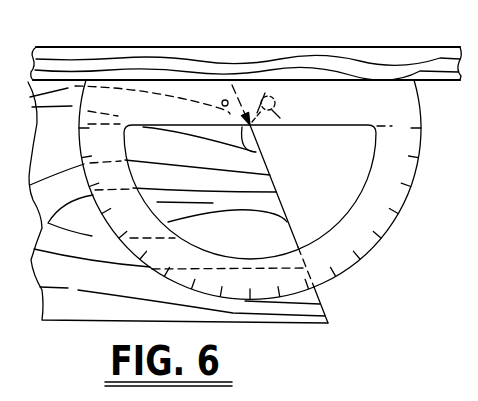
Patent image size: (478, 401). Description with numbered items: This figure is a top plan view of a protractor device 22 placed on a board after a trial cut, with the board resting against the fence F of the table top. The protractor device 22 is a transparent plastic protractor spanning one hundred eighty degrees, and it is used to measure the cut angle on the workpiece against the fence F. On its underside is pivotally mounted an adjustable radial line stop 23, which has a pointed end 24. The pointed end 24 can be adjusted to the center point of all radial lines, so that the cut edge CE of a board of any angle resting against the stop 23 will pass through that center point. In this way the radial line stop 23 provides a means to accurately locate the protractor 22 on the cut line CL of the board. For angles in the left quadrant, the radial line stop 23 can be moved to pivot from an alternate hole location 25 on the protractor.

The fence F is at (110, 55).
The protractor device 22 is at (341, 100).
The radial line stop 23 is at (283, 122).
The pointed end 24 is at (257, 152).
The alternate hole location 25 is at (222, 103).
The cut line CL is at (276, 191).
The cut edge CE is at (322, 304).